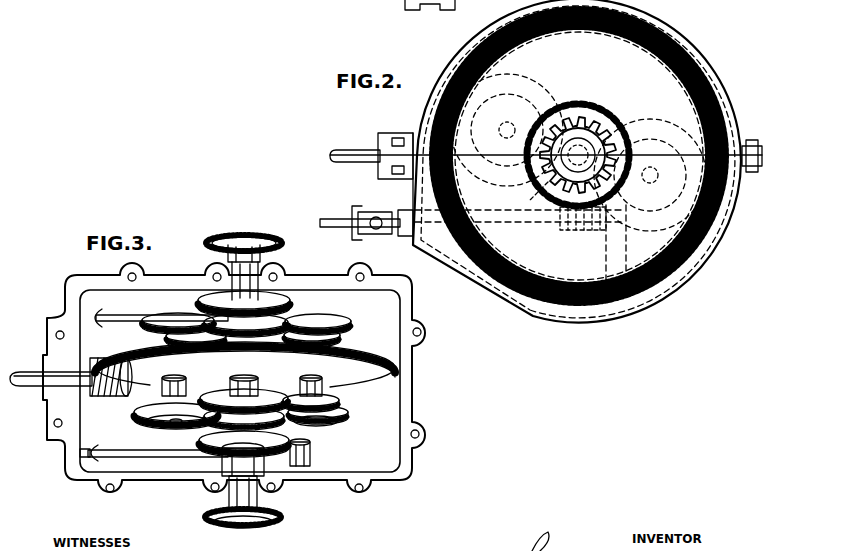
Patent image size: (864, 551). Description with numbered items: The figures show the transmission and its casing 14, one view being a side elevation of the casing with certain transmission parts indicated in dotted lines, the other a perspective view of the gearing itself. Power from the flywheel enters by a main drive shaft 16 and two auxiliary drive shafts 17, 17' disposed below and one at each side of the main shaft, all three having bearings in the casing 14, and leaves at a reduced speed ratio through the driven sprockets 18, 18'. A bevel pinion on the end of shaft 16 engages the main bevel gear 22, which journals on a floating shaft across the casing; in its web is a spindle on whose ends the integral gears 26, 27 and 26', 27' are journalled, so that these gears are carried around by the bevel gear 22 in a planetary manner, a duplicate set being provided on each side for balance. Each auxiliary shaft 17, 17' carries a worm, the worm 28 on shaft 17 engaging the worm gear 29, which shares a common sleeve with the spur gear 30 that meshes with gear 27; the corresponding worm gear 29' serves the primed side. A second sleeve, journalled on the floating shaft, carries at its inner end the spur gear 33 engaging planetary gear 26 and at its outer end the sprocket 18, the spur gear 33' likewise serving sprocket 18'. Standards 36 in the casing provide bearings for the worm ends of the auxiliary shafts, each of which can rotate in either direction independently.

In FIG. 3, the transmission casing 14 is at (400, 410).
In FIG. 2, the main drive shaft 16 is at (353, 152).
In FIG. 3, the main drive shaft 16 is at (28, 387).
In FIG. 2, the auxiliary drive shaft 17 is at (472, 213).
In FIG. 3, the auxiliary drive shaft 17 is at (154, 484).
In FIG. 3, the auxiliary drive shaft 17' is at (135, 295).
In FIG. 2, the driven sprocket 18 is at (524, 198).
In FIG. 3, the driven sprocket 18 is at (263, 488).
In FIG. 3, the driven sprocket 18' is at (244, 234).
In FIG. 2, the main bevel gear 22 is at (708, 51).
In FIG. 3, the main bevel gear 22 is at (395, 364).
In FIG. 2, the planetary gear 26 is at (515, 122).
In FIG. 3, the planetary gear 26 is at (159, 416).
In FIG. 3, the planetary gear 26' is at (337, 333).
In FIG. 2, the planetary gear 27 is at (507, 124).
In FIG. 3, the planetary gear 27 is at (159, 432).
In FIG. 3, the planetary gear 27' is at (330, 317).
In FIG. 2, the worm 28 is at (576, 232).
In FIG. 2, the worm gear 29 is at (581, 143).
In FIG. 3, the worm gear 29 is at (276, 444).
In FIG. 3, the worm gear 29' is at (261, 283).
In FIG. 2, the spur gear 30 is at (626, 126).
In FIG. 2, the spur gear 33 is at (578, 131).
In FIG. 3, the spur gear 33 is at (242, 376).
In FIG. 3, the spur gear 33' is at (254, 348).
In FIG. 2, the standard 36 is at (623, 257).
In FIG. 3, the standard 36 is at (309, 462).